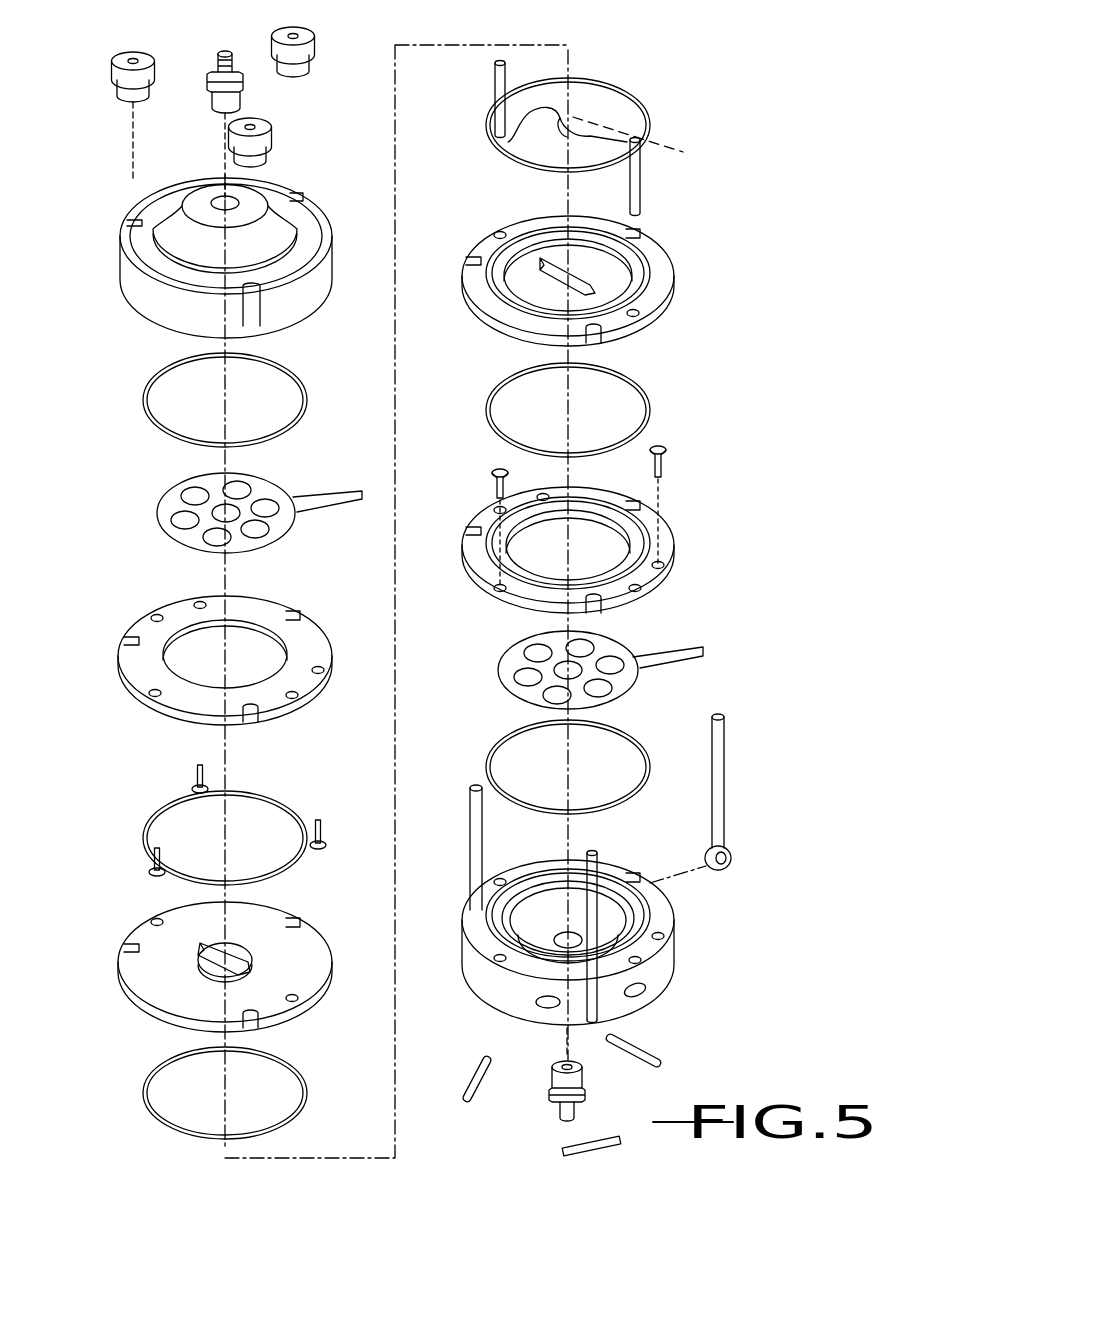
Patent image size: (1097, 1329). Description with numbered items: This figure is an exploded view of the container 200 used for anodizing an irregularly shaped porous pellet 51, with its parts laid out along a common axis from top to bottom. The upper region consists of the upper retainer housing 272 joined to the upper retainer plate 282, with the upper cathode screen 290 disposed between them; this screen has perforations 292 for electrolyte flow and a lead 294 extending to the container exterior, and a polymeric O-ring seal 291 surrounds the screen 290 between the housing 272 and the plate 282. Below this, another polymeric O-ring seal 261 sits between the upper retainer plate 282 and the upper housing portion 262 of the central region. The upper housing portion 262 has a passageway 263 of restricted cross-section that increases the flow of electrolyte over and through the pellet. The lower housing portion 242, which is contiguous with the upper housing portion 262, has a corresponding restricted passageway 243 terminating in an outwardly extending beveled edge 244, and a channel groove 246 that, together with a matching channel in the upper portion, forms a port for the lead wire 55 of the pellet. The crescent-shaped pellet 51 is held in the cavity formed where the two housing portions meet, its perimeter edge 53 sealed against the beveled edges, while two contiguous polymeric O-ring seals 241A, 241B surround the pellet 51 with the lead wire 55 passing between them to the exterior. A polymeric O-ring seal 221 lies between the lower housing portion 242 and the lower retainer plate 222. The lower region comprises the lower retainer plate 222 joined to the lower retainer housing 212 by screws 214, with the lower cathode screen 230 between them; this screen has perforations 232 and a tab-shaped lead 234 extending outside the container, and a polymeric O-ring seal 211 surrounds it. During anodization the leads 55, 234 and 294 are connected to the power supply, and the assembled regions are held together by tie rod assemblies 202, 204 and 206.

The container 200 is at (692, 70).
The tie rod assembly 202 is at (596, 846).
The tie rod assembly 204 is at (467, 813).
The tie rod assembly 206 is at (714, 878).
The polymeric O-ring seal 211 is at (648, 755).
The lower retainer housing 212 is at (620, 871).
The screws 214 is at (495, 470).
The polymeric O-ring seal 221 is at (650, 400).
The lower retainer plate 222 is at (674, 540).
The lower cathode screen 230 is at (605, 664).
The perforations 232 is at (528, 672).
The lead 234 is at (692, 645).
The polymeric O-ring seal 241A is at (145, 1108).
The polymeric O-ring seal 241B is at (618, 85).
The lower housing portion 242 is at (601, 286).
The passageway 243 is at (553, 280).
The beveled edge 244 is at (648, 253).
The channel groove 246 is at (612, 290).
The polymeric O-ring seal 261 is at (152, 818).
The upper housing portion 262 is at (198, 960).
The passageway 263 is at (243, 962).
The upper retainer housing 272 is at (120, 262).
The upper retainer plate 282 is at (130, 700).
The upper cathode screen 290 is at (214, 499).
The polymeric O-ring seal 291 is at (157, 380).
The perforations 292 is at (212, 535).
The lead 294 is at (330, 488).
The porous pellet 51 is at (553, 138).
The perimeter edge 53 is at (506, 141).
The lead wire 55 is at (657, 145).